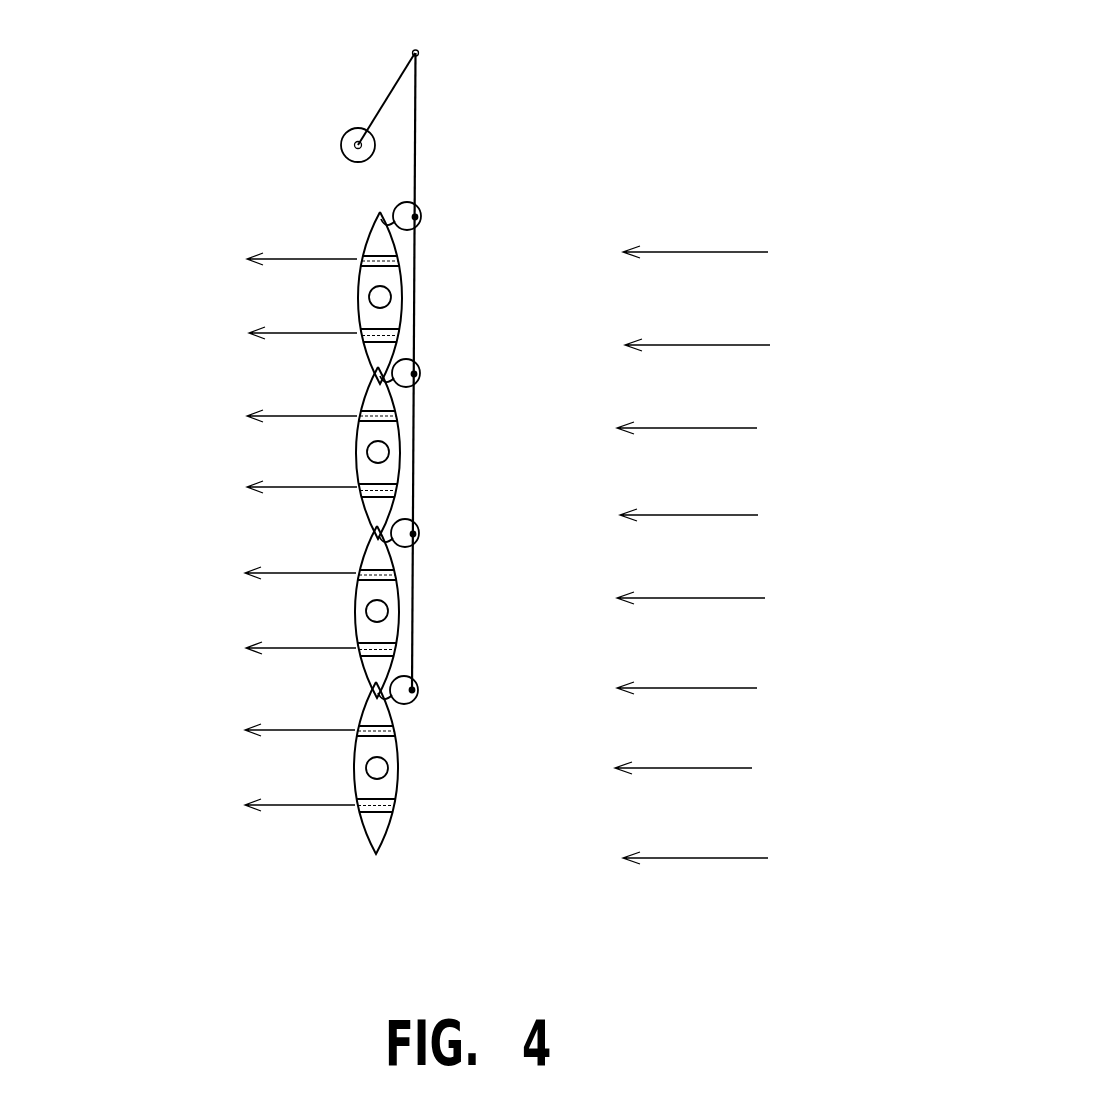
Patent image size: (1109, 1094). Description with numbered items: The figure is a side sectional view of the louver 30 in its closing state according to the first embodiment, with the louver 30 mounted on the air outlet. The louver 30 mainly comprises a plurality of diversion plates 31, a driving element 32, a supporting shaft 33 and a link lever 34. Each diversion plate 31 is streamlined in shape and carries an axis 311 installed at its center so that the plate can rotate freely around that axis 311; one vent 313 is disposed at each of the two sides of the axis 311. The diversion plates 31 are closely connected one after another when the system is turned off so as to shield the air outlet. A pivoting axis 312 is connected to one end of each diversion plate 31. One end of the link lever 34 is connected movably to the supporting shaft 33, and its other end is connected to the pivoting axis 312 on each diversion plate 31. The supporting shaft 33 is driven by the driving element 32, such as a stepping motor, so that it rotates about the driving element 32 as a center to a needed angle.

The louver 30 is at (652, 96).
The diversion plate 31 is at (370, 227).
The axis 311 is at (367, 297).
The pivoting axis 312 is at (417, 204).
The vent 313 is at (398, 255).
The driving element 32 is at (357, 128).
The supporting shaft 33 is at (386, 100).
The link lever 34 is at (418, 133).